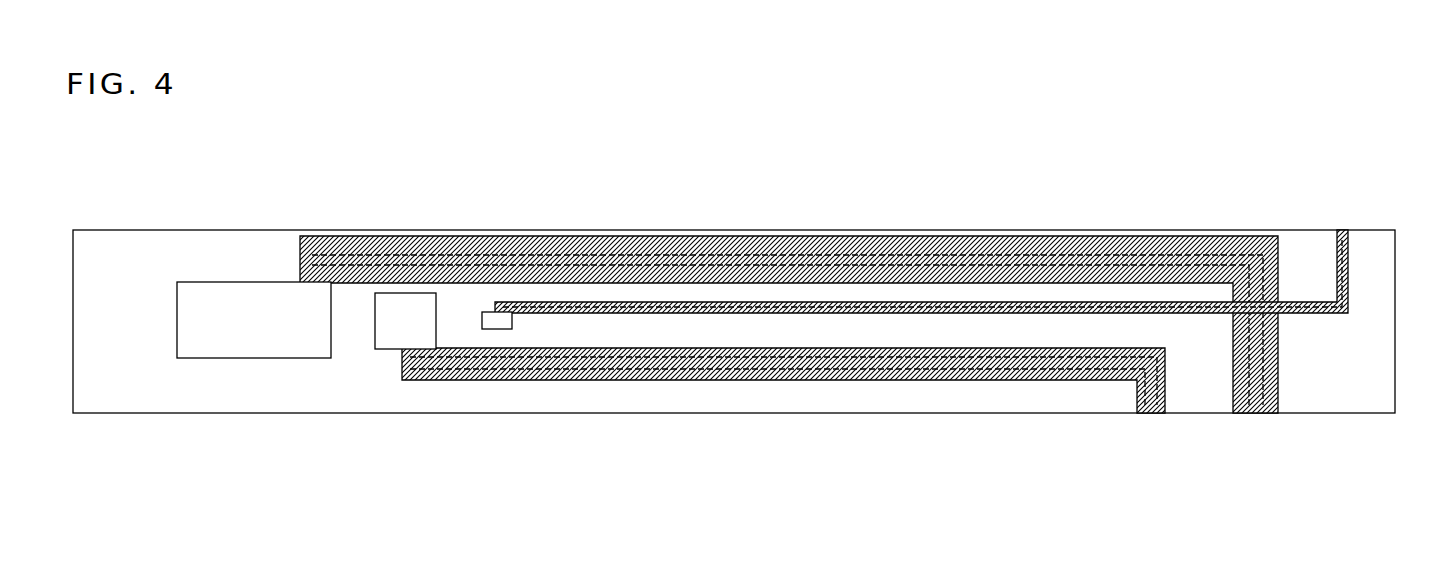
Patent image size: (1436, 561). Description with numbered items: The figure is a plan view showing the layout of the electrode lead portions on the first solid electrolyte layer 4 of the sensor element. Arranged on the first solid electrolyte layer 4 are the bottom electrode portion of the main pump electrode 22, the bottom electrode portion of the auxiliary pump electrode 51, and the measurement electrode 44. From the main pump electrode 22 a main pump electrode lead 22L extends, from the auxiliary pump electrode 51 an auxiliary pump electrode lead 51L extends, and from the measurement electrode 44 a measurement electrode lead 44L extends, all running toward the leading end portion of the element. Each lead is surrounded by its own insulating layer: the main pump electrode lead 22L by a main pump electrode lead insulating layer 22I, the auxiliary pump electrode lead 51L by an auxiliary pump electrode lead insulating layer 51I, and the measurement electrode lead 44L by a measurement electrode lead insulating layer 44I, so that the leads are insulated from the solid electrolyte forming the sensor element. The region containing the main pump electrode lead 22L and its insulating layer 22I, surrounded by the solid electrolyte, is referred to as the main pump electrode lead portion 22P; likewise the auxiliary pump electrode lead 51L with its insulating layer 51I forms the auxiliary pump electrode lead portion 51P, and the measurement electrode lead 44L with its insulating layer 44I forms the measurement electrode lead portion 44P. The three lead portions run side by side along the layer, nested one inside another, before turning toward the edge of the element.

The first solid electrolyte layer 4 is at (1366, 336).
The main pump electrode 22 is at (245, 342).
The main pump electrode lead 22L is at (353, 247).
The main pump electrode lead insulating layer 22I is at (425, 247).
The main pump electrode lead portion 22P is at (578, 232).
The measurement electrode 44 is at (497, 322).
The measurement electrode lead 44L is at (662, 298).
The measurement electrode lead insulating layer 44I is at (733, 300).
The measurement electrode lead portion 44P is at (776, 297).
The auxiliary pump electrode 51 is at (392, 341).
The auxiliary pump electrode lead 51L is at (661, 378).
The auxiliary pump electrode lead insulating layer 51I is at (732, 380).
The auxiliary pump electrode lead portion 51P is at (793, 383).